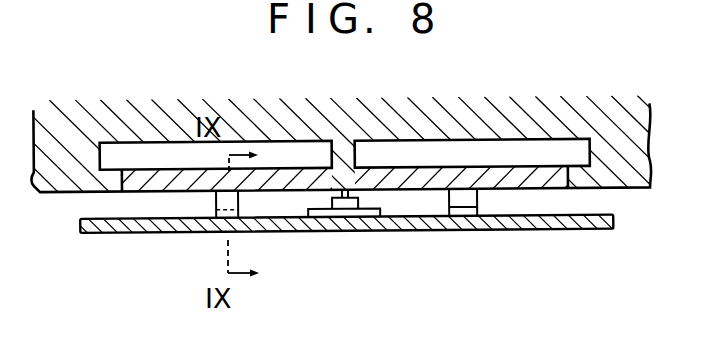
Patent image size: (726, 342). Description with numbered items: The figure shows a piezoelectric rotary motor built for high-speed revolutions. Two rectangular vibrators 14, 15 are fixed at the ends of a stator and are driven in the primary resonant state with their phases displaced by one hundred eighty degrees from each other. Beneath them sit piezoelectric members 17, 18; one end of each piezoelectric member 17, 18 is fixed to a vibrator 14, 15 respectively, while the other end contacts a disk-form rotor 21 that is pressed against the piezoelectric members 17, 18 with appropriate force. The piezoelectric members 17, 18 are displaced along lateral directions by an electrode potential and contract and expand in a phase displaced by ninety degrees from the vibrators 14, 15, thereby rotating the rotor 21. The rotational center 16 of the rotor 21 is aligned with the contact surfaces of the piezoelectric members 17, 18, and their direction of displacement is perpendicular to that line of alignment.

The rectangular vibrator 14 is at (289, 180).
The rectangular vibrator 15 is at (477, 178).
The rotational center 16 is at (355, 213).
The piezoelectric member 17 is at (217, 203).
The piezoelectric member 18 is at (477, 204).
The rotor 21 is at (575, 221).